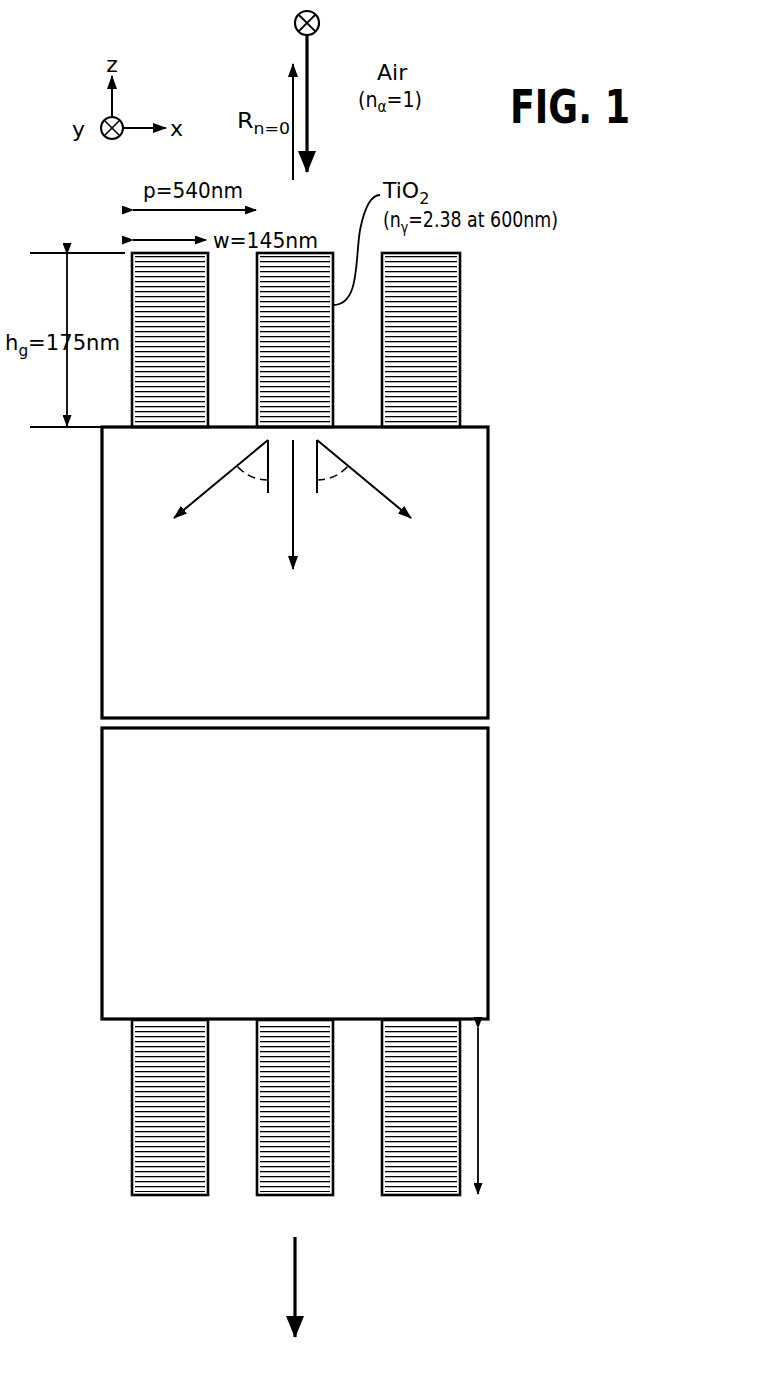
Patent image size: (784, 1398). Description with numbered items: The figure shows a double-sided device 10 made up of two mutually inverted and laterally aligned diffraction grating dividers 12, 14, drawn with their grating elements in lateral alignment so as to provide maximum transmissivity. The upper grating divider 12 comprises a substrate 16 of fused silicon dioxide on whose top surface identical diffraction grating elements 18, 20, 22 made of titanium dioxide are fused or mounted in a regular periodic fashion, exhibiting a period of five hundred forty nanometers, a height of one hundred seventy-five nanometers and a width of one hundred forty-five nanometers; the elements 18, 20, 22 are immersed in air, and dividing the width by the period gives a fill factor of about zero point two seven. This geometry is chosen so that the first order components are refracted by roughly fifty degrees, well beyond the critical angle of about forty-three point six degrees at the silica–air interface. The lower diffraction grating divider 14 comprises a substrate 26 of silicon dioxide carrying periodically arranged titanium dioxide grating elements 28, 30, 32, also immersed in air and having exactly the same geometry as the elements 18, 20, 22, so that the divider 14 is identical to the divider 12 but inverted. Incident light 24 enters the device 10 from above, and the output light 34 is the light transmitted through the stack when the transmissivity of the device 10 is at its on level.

The double-sided device 10 is at (325, 485).
The diffraction grating divider 12 is at (327, 340).
The diffraction grating divider 14 is at (322, 1074).
The substrate 16 is at (102, 543).
The diffraction grating element 18 is at (132, 310).
The diffraction grating element 20 is at (257, 385).
The diffraction grating element 22 is at (460, 312).
The incident light 24 is at (307, 57).
The substrate 26 is at (488, 758).
The grating element 28 is at (132, 1148).
The grating element 30 is at (257, 1180).
The grating element 32 is at (417, 1195).
The output light 34 is at (293, 1263).